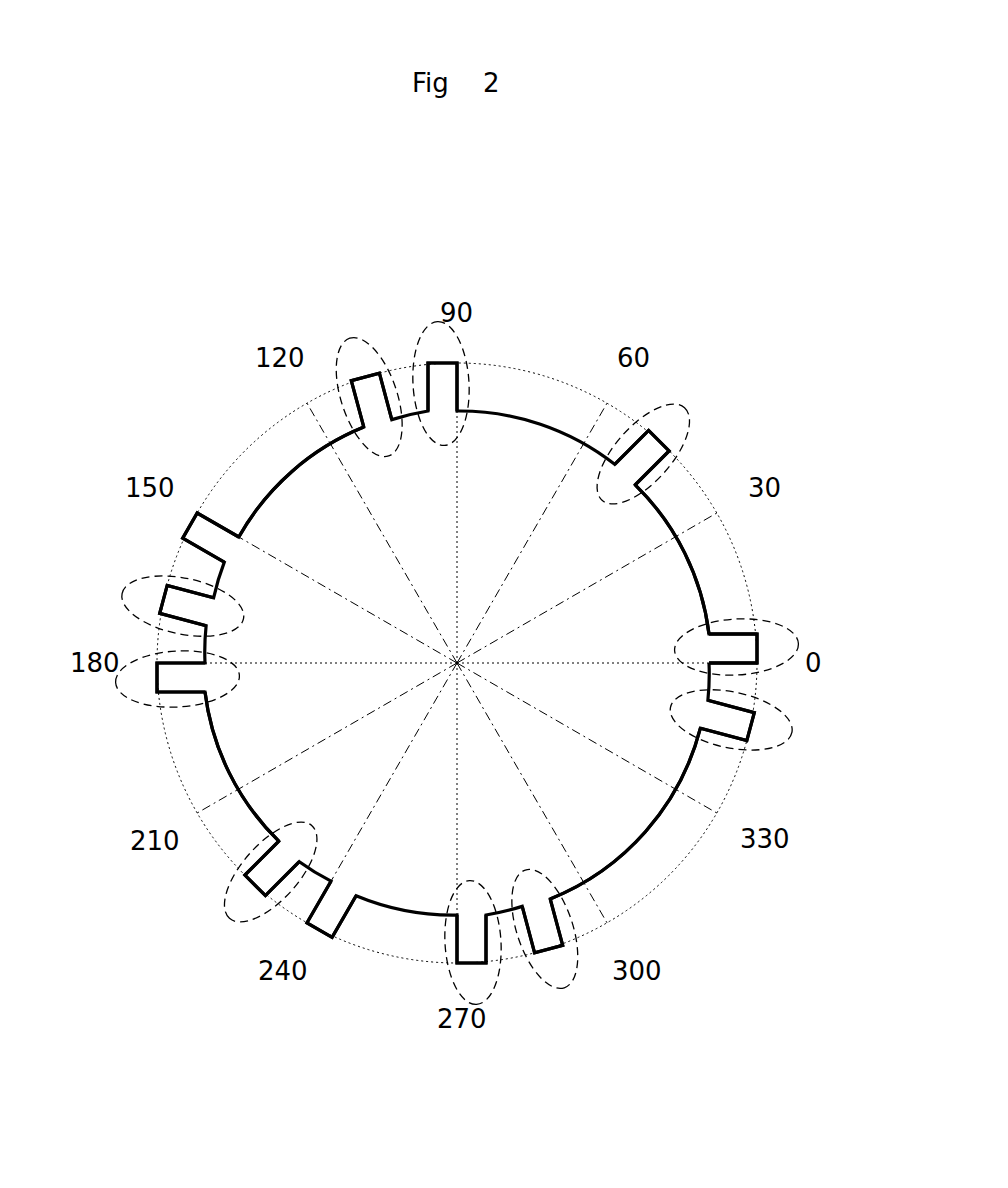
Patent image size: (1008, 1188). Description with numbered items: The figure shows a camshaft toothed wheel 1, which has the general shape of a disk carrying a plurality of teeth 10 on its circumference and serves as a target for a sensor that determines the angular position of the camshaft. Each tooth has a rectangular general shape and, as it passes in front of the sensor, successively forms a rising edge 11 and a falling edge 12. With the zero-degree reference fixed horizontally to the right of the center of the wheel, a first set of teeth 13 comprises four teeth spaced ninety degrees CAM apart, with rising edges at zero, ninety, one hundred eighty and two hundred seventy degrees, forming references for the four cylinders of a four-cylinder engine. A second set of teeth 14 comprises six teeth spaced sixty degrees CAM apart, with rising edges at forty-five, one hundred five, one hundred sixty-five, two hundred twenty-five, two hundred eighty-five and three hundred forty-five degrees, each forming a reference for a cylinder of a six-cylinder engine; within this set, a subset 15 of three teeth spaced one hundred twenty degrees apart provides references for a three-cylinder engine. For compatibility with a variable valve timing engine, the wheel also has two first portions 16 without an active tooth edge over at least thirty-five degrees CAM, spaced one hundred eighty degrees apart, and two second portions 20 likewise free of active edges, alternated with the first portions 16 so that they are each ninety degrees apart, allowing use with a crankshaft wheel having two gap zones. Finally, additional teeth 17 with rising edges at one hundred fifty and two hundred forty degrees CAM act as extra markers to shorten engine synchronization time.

The camshaft toothed wheel 1 is at (208, 323).
The teeth 10 is at (155, 618).
The rising edge 11 is at (738, 670).
The falling edge 12 is at (737, 628).
The first set of teeth 13 is at (428, 335).
The second set of teeth 14 is at (345, 348).
The subset of three teeth 15 is at (695, 432).
The first portions 16 is at (278, 462).
The additional teeth 17 is at (215, 515).
The second portions 20 is at (700, 563).